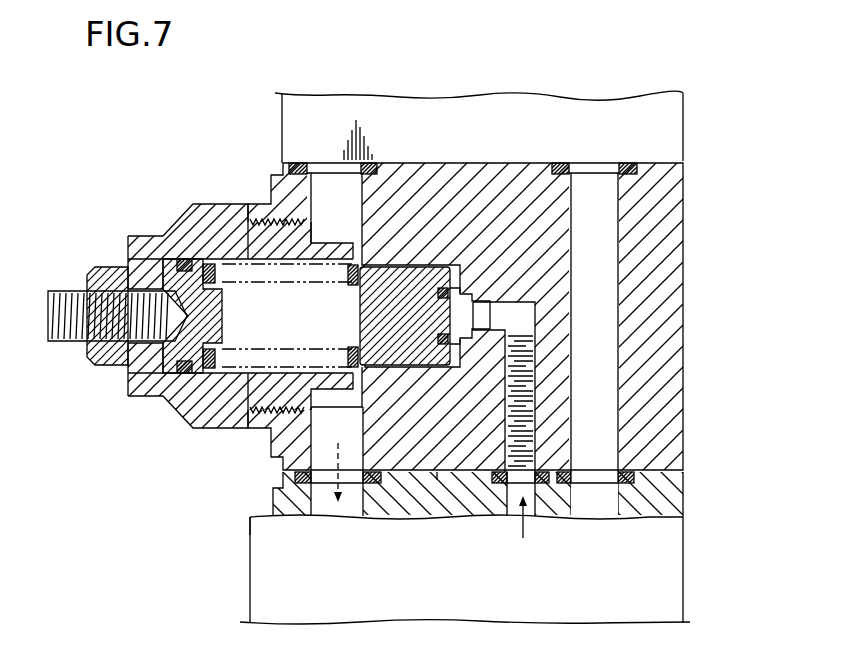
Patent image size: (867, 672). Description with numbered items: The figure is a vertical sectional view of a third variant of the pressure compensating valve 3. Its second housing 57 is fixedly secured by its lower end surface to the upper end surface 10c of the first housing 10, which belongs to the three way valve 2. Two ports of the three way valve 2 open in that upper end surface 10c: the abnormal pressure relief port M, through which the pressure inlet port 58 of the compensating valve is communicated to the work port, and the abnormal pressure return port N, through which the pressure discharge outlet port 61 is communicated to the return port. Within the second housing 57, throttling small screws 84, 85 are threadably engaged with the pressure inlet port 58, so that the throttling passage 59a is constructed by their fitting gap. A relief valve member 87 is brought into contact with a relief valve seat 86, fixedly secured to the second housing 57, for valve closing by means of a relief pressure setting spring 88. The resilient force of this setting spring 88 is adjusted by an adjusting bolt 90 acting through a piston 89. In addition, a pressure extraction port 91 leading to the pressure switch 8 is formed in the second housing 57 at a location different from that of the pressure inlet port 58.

The three way valve 2 is at (245, 534).
The pressure compensating valve 3 is at (164, 195).
The pressure switch 8 is at (677, 130).
The first housing 10 is at (250, 573).
The upper end surface of the first housing 10c is at (434, 466).
The second housing 57 is at (685, 256).
The pressure inlet port 58 is at (537, 463).
The throttling passage 59a is at (502, 386).
The pressure discharge outlet port 61 is at (370, 382).
The throttling small screw 84 is at (532, 430).
The throttling small screw 85 is at (533, 367).
The relief valve seat 86 is at (453, 290).
The relief valve member 87 is at (398, 265).
The relief pressure setting spring 88 is at (222, 362).
The piston 89 is at (163, 358).
The adjusting bolt 90 is at (73, 342).
The pressure extraction port 91 is at (614, 312).
The abnormal pressure return port N is at (358, 500).
The abnormal pressure relief port M is at (536, 508).